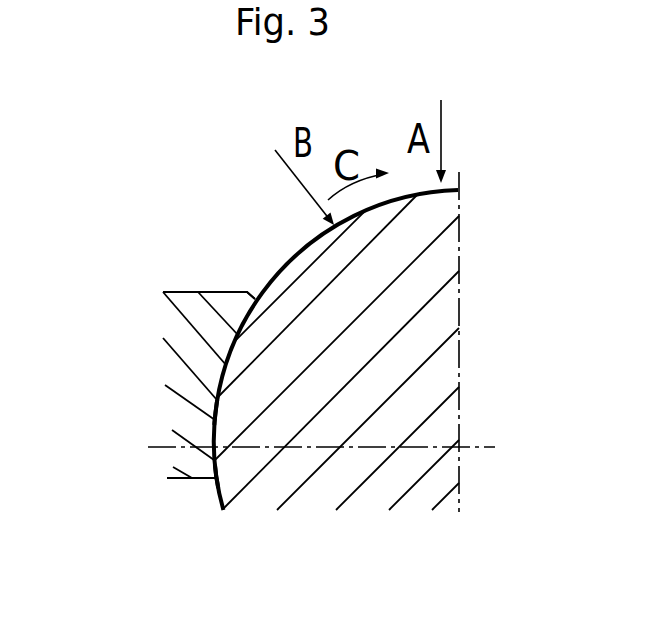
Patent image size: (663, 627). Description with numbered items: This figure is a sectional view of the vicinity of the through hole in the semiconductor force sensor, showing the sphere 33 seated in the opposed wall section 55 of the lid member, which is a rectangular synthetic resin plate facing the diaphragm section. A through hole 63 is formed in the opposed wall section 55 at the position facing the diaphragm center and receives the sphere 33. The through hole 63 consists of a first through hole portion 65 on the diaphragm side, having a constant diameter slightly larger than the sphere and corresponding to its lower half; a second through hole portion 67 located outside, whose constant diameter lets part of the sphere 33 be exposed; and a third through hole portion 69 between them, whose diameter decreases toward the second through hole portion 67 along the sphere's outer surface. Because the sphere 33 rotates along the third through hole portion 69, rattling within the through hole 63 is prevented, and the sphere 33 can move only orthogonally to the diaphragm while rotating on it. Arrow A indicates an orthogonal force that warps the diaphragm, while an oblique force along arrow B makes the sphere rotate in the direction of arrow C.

The sphere 33 is at (440, 310).
The opposed wall section 55 is at (150, 352).
The through hole 63 is at (203, 414).
The first through hole portion 65 is at (216, 473).
The second through hole portion 67 is at (239, 296).
The third through hole portion 69 is at (242, 328).